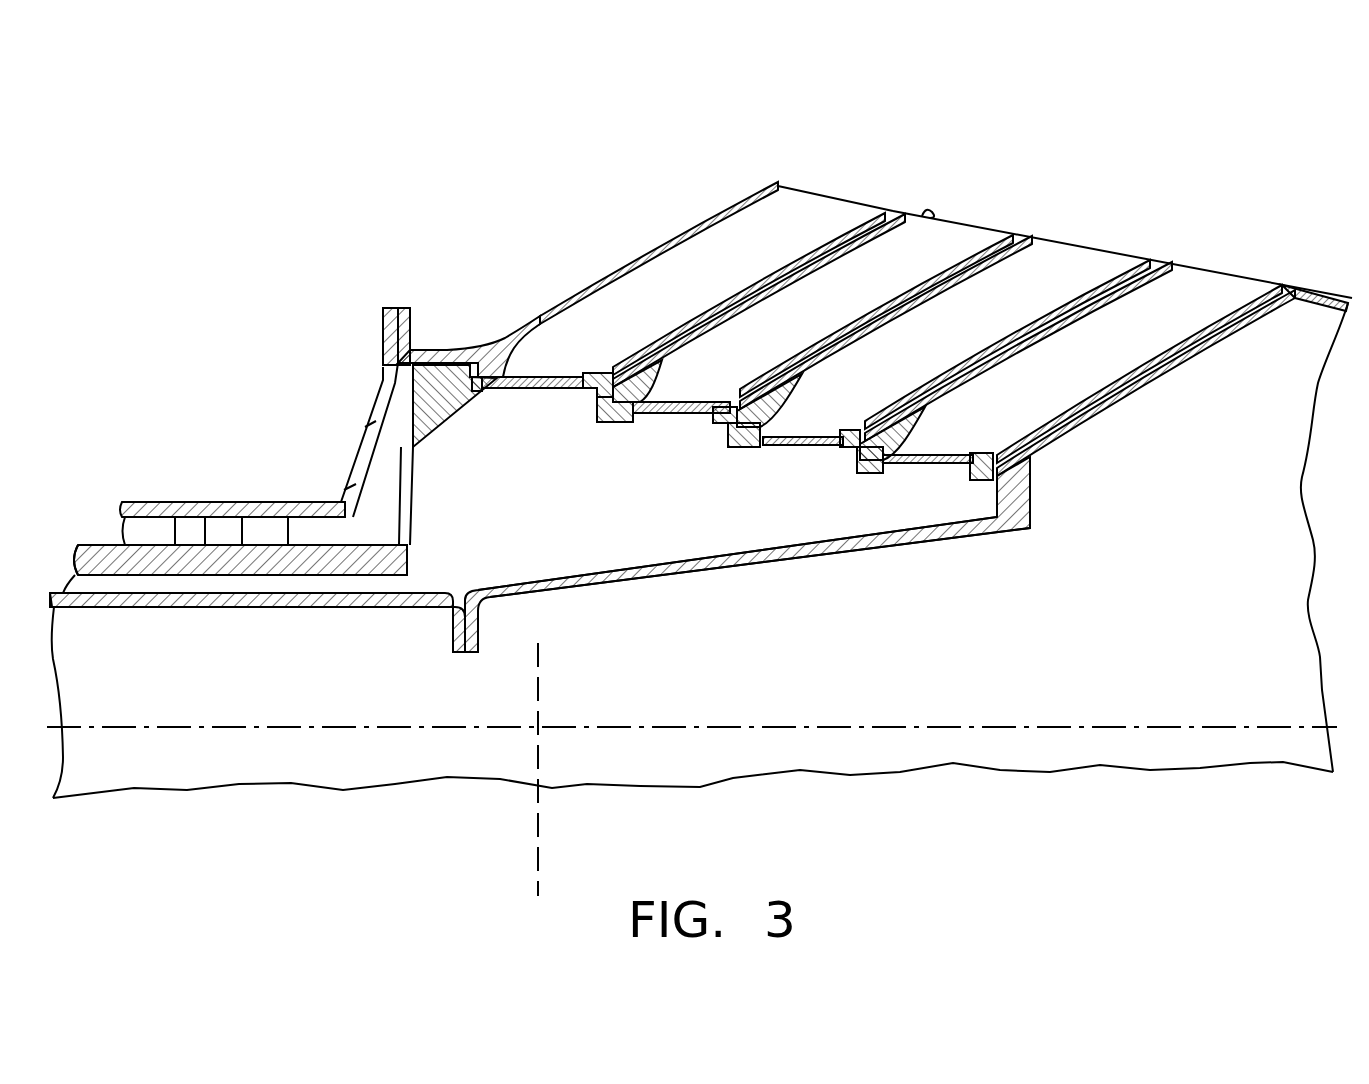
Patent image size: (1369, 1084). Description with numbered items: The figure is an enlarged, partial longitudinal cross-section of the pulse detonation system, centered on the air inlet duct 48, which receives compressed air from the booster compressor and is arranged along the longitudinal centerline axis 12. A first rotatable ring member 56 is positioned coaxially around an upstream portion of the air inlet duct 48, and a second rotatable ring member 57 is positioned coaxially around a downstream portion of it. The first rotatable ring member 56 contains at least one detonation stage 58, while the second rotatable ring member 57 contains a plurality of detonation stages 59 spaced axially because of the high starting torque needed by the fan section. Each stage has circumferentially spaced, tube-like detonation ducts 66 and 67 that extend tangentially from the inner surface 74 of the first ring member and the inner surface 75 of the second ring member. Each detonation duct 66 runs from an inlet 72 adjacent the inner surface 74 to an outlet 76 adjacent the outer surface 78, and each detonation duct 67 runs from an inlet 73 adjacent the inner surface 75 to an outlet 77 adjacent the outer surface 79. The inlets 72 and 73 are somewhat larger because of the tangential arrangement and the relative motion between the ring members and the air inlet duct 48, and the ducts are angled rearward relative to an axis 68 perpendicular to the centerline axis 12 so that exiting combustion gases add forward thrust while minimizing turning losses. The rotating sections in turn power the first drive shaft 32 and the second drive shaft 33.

The longitudinal centerline axis 12 is at (983, 727).
The first drive shaft 32 is at (235, 610).
The second drive shaft 33 is at (190, 502).
The air inlet duct 48 is at (688, 557).
The first rotatable ring member 56 is at (690, 230).
The second rotatable ring member 57 is at (1090, 402).
The detonation stage 58 is at (820, 195).
The detonation stages 59 is at (958, 219).
The detonation ducts 66 is at (607, 282).
The detonation ducts 67 is at (795, 276).
The axis 68 is at (545, 678).
The inlet 72 is at (535, 377).
The inlet 73 is at (645, 398).
The inner surface 74 is at (507, 386).
The inner surface 75 is at (632, 420).
The outlet 76 is at (795, 187).
The outlet 77 is at (930, 217).
The outer surface 78 is at (893, 212).
The outer surface 79 is at (1025, 238).